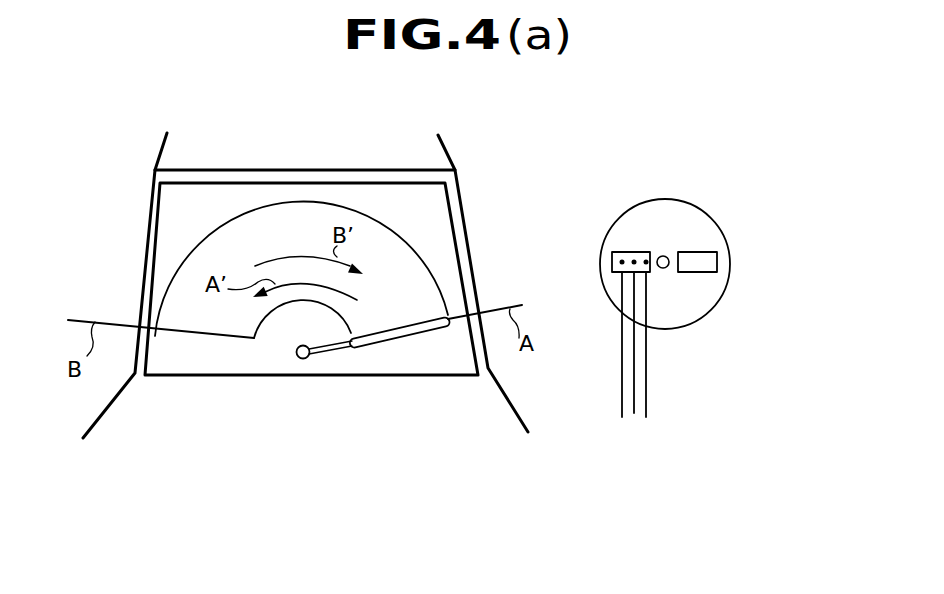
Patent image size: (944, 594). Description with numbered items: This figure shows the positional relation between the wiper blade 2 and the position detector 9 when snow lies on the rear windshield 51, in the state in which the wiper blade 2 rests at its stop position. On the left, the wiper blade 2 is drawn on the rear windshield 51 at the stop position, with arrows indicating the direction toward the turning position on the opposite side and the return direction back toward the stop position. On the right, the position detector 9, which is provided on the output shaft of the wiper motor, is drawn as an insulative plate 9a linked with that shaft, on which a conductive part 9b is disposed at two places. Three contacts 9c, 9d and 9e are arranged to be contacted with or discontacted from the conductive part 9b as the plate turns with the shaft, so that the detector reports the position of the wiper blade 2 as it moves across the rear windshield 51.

The rear windshield 51 is at (302, 216).
The wiper blade 2 is at (398, 333).
The position detector 9 is at (677, 308).
The insulative plate 9a is at (677, 212).
The conductive part 9b is at (640, 254).
The contact 9c is at (621, 392).
The contact 9d is at (634, 411).
The contact 9e is at (647, 399).